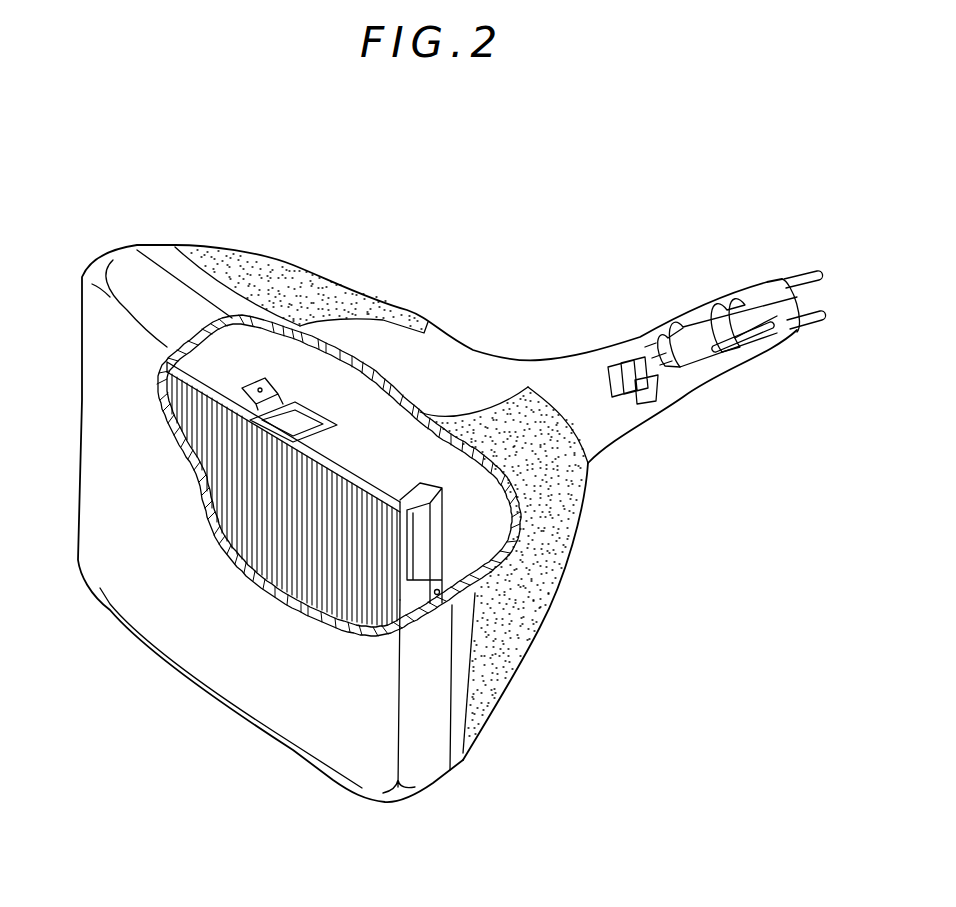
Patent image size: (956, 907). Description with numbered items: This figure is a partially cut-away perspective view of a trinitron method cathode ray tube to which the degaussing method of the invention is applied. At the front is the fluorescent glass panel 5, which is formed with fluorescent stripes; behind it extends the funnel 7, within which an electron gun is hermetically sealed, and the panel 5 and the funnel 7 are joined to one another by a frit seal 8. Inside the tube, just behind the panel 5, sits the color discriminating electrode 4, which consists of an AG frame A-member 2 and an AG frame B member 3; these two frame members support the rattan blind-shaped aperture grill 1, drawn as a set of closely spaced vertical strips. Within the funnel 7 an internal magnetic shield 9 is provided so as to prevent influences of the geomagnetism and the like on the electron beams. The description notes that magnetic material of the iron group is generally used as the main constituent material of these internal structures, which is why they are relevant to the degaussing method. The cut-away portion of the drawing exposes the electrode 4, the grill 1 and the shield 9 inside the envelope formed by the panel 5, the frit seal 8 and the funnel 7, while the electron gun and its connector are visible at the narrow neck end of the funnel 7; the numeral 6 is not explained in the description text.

The aperture grill 1 is at (372, 597).
The AG frame A-member 2 is at (395, 478).
The AG frame B member 3 is at (438, 542).
The color discriminating electrode 4 is at (627, 532).
The fluorescent glass panel 5 is at (313, 747).
The connector 6 is at (670, 380).
The funnel 7 is at (467, 350).
The frit seal 8 is at (458, 750).
The internal magnetic shield 9 is at (497, 690).